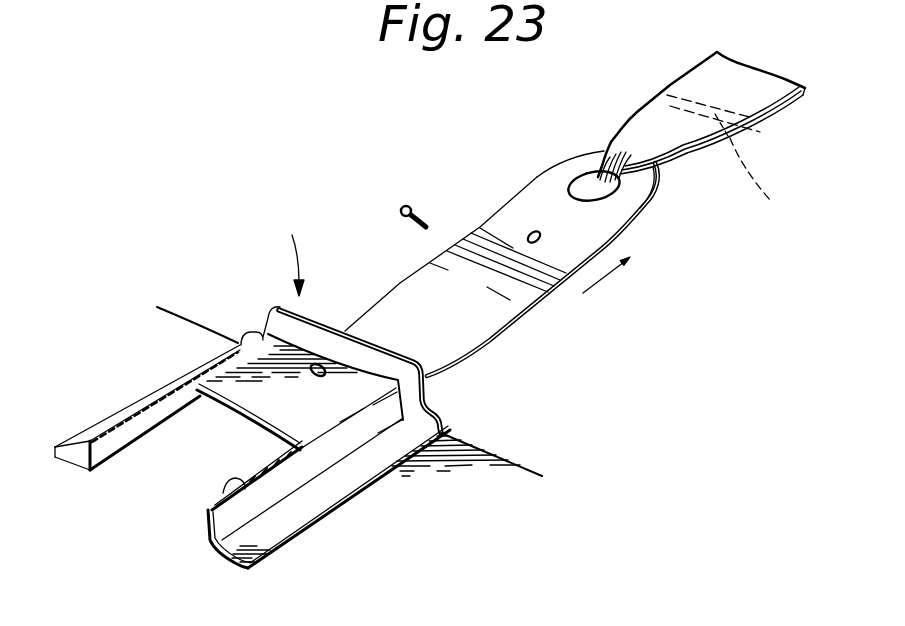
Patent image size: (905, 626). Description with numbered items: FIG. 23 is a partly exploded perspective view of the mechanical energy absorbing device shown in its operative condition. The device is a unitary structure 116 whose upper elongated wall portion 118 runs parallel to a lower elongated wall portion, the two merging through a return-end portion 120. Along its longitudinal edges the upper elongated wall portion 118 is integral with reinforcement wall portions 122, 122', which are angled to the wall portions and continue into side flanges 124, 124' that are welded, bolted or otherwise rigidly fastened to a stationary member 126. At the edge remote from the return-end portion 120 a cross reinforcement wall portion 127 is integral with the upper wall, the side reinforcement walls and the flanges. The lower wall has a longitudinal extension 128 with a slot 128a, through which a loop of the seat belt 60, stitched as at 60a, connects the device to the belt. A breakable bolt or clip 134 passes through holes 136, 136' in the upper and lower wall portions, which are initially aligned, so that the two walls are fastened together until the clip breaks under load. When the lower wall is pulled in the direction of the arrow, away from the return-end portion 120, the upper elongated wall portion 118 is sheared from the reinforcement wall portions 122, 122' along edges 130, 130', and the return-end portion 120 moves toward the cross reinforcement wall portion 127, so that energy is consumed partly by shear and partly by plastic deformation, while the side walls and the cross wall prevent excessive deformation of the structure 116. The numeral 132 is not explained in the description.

The seat belt 60 is at (692, 68).
The stitching of belt loop portion 60a is at (771, 180).
The unitary structure 116 is at (278, 248).
The upper elongated wall portion 118 is at (477, 227).
The return-end portion 120 is at (247, 413).
The reinforcement wall portion 122 is at (93, 500).
The reinforcement wall portion 122' is at (195, 559).
The side flange 124 is at (131, 407).
The side flange 124' is at (353, 493).
The stationary member 126 is at (515, 460).
The cross reinforcement wall portion 127 is at (276, 311).
The longitudinal extension 128 is at (655, 205).
The slot 128a is at (570, 177).
The edge 130 is at (161, 396).
The edge 130' is at (300, 512).
The bracket element 132 is at (260, 10).
The breakable bolt or clip 134 is at (400, 206).
The hole 136 is at (349, 305).
The hole 136' is at (570, 289).